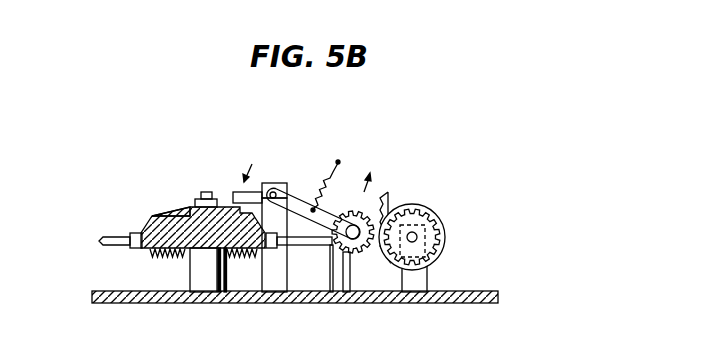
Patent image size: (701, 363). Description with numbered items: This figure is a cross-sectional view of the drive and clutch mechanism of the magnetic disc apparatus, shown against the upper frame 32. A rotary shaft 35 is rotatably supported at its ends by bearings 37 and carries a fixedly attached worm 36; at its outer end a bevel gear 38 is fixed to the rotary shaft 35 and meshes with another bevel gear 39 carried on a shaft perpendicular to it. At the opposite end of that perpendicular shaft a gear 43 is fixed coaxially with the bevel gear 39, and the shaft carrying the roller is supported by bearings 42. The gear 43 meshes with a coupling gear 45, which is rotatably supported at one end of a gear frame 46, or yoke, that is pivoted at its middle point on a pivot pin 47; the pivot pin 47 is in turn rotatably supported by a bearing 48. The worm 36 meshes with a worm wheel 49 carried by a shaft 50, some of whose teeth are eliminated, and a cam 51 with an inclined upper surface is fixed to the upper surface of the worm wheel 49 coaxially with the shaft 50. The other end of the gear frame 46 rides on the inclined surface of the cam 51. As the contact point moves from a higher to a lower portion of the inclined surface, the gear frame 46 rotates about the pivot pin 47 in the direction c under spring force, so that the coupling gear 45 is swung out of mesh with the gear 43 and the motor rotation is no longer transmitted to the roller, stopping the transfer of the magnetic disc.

The upper frame 32 is at (152, 303).
The rotary shaft 35 is at (104, 238).
The worm 36 is at (153, 262).
The bearings 37 is at (343, 273).
The bevel gear 38 is at (389, 210).
The bevel gear 39 is at (422, 205).
The bearings 42 is at (418, 278).
The gear 43 is at (437, 228).
The coupling gear 45 is at (348, 204).
The gear frame 46 is at (330, 213).
The pivot pin 47 is at (273, 187).
The bearing 48 is at (278, 284).
The worm wheel 49 is at (135, 222).
The shaft 50 is at (202, 191).
The cam 51 is at (170, 207).